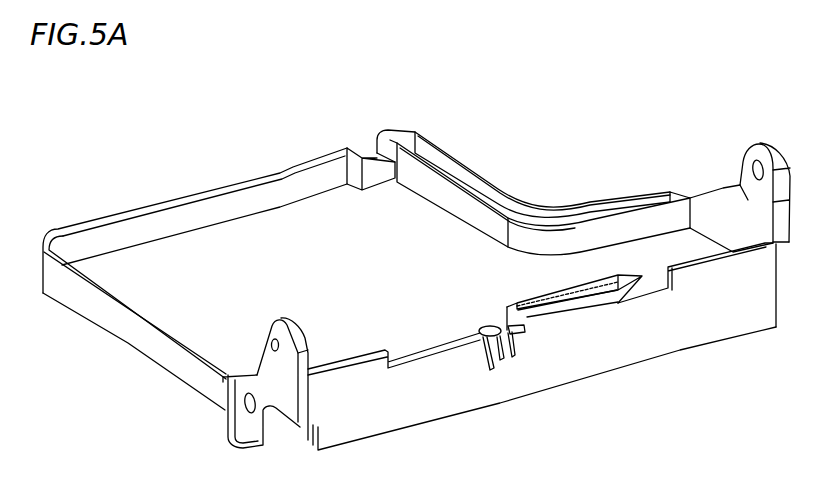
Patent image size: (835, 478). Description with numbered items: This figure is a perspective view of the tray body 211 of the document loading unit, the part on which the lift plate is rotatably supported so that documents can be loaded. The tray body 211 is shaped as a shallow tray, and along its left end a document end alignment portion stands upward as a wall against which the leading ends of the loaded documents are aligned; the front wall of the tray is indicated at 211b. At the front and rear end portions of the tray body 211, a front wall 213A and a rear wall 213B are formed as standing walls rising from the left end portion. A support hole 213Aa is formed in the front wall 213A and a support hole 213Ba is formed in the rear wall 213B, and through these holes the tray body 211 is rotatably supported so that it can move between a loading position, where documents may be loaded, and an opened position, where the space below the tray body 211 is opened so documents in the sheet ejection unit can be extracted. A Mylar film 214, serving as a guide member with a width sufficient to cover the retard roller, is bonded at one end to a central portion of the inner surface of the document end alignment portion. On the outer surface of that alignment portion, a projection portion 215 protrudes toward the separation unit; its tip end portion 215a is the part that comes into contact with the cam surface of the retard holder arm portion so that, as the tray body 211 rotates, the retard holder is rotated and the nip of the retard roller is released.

The tray body 211 is at (197, 142).
The front wall of tray 211b is at (456, 388).
The front wall 213A is at (738, 186).
The support hole 213Aa is at (752, 168).
The rear wall 213B is at (273, 373).
The support hole 213Ba is at (258, 346).
The Mylar film 214 is at (545, 294).
The projection portion 215 is at (484, 366).
The tip end portion 215a is at (522, 336).